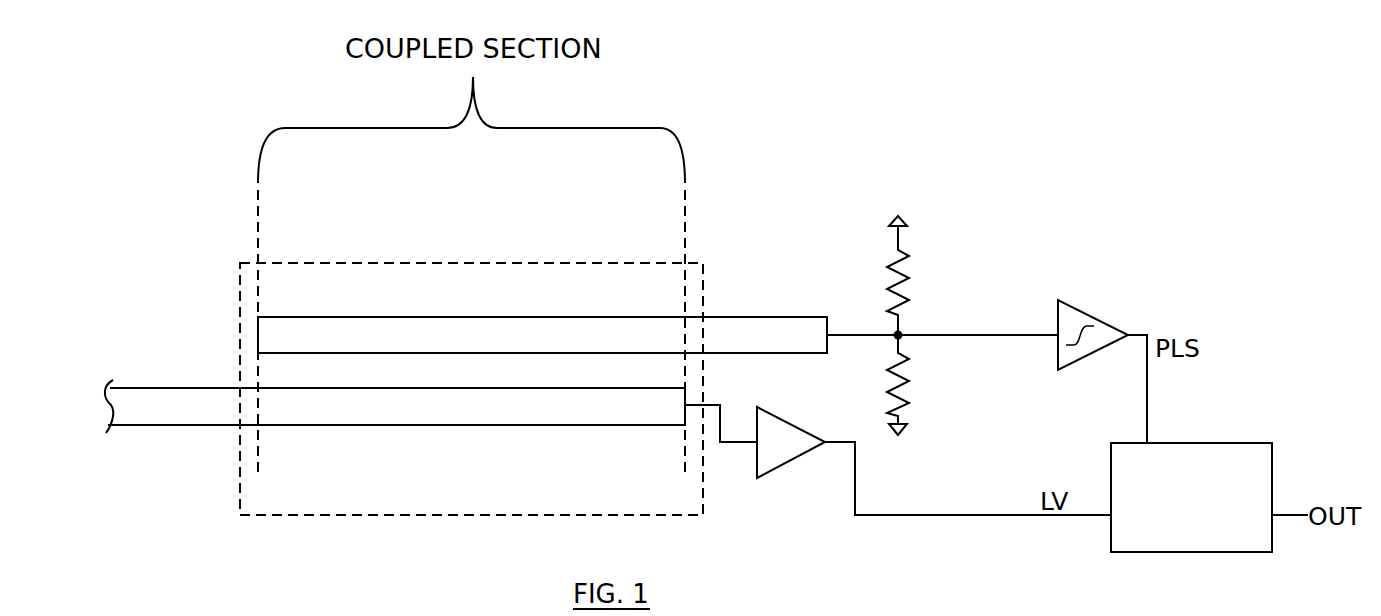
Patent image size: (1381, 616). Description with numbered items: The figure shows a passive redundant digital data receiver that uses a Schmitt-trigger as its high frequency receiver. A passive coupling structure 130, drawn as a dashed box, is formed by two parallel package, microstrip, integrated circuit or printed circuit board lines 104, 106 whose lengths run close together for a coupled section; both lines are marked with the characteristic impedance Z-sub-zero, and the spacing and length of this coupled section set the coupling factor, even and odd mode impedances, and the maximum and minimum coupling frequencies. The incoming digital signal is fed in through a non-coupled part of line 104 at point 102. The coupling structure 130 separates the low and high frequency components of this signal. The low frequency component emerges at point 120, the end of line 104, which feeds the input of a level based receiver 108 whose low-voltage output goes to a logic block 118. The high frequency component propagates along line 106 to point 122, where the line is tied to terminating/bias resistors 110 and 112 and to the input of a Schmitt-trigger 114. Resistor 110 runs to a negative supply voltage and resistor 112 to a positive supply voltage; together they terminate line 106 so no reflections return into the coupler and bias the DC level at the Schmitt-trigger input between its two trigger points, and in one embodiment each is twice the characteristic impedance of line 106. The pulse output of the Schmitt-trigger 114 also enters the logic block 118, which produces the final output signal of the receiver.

The point 102 is at (105, 405).
The line 104 is at (350, 425).
The line 106 is at (366, 317).
The level based receiver 108 is at (757, 478).
The terminating/bias resistor 110 is at (905, 400).
The terminating/bias resistor 112 is at (890, 270).
The Schmitt-trigger 114 is at (1068, 366).
The logic block 118 is at (1188, 443).
The point 120 is at (687, 397).
The point 122 is at (827, 317).
The passive coupling structure 130 is at (240, 263).